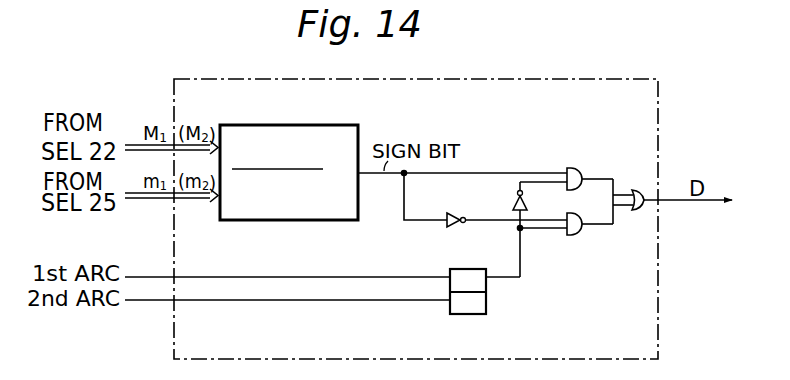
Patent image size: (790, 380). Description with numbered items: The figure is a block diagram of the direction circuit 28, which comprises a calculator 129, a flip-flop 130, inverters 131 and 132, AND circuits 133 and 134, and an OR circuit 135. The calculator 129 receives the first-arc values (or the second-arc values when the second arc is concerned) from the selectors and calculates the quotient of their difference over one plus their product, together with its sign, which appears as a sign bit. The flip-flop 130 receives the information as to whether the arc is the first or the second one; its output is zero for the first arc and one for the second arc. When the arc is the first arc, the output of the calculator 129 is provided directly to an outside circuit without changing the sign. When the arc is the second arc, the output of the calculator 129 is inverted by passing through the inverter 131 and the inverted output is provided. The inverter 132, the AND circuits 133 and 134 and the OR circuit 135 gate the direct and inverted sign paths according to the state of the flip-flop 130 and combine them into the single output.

The direction circuit 28 is at (568, 66).
The calculator 129 is at (322, 117).
The flip-flop 130 is at (463, 315).
The inverter 131 is at (457, 213).
The inverter 132 is at (516, 193).
The AND circuit 133 is at (571, 167).
The AND circuit 134 is at (578, 236).
The OR circuit 135 is at (636, 189).